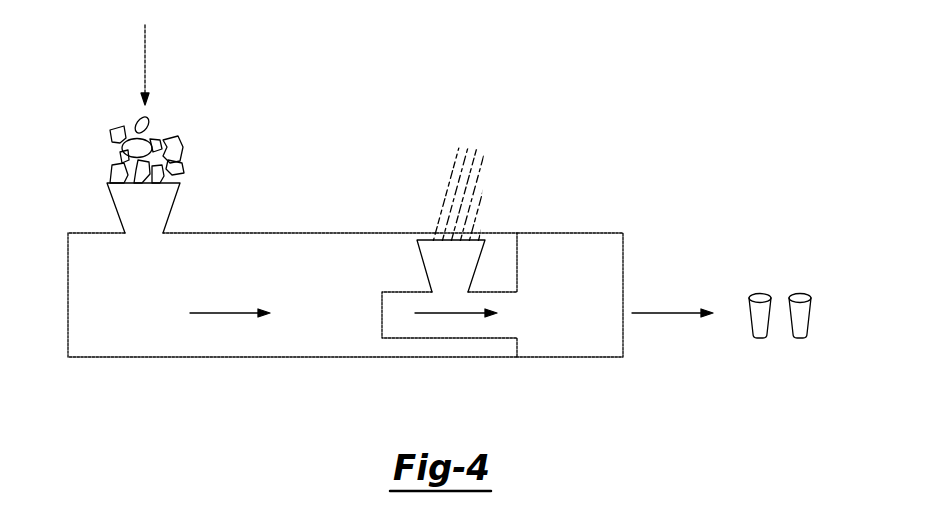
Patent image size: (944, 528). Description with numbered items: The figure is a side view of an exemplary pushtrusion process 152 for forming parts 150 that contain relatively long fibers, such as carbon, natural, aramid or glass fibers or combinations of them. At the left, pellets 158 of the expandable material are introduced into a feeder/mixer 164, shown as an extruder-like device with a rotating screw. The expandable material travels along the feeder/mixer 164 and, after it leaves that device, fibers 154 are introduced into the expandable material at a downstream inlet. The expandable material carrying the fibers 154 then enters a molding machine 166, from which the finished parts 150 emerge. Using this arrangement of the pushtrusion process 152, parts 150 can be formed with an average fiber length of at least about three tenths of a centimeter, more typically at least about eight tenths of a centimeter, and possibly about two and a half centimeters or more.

The containers / cups 150 is at (802, 290).
The processing system 152 is at (400, 191).
The liquid spray 154 is at (433, 180).
The solid ingredient material 158 is at (175, 135).
The hopper / funnel 164 is at (188, 203).
The mixing chamber 166 is at (595, 223).